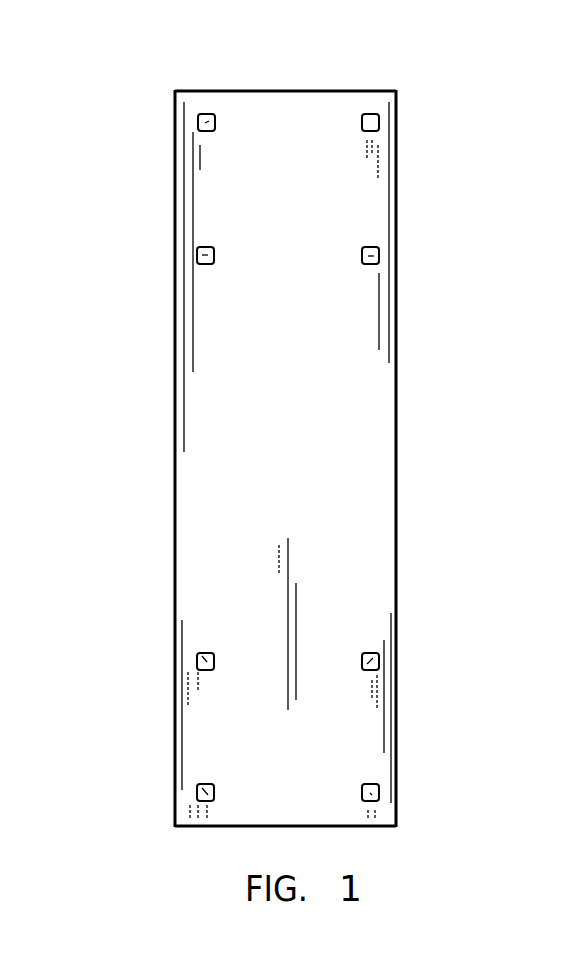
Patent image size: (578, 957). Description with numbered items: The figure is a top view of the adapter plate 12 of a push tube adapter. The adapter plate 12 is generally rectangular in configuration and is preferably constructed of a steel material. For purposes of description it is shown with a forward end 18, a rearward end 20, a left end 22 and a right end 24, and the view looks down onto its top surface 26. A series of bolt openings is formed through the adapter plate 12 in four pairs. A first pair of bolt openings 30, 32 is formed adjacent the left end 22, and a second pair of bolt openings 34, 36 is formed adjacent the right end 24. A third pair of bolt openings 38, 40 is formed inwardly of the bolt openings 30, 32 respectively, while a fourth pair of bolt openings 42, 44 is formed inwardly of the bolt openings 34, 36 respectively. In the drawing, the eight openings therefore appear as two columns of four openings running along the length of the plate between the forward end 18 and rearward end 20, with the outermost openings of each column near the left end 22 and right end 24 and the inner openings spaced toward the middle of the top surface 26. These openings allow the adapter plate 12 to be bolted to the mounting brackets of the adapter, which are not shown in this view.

The adapter plate 12 is at (458, 225).
The forward end 18 is at (175, 442).
The rearward end 20 is at (397, 433).
The left end 22 is at (317, 826).
The right end 24 is at (242, 90).
The top surface 26 is at (297, 495).
The bolt opening 30 is at (200, 793).
The bolt opening 32 is at (380, 790).
The bolt opening 34 is at (198, 122).
The bolt opening 36 is at (379, 123).
The bolt opening 38 is at (197, 652).
The bolt opening 40 is at (376, 655).
The bolt opening 42 is at (197, 255).
The bolt opening 44 is at (379, 257).